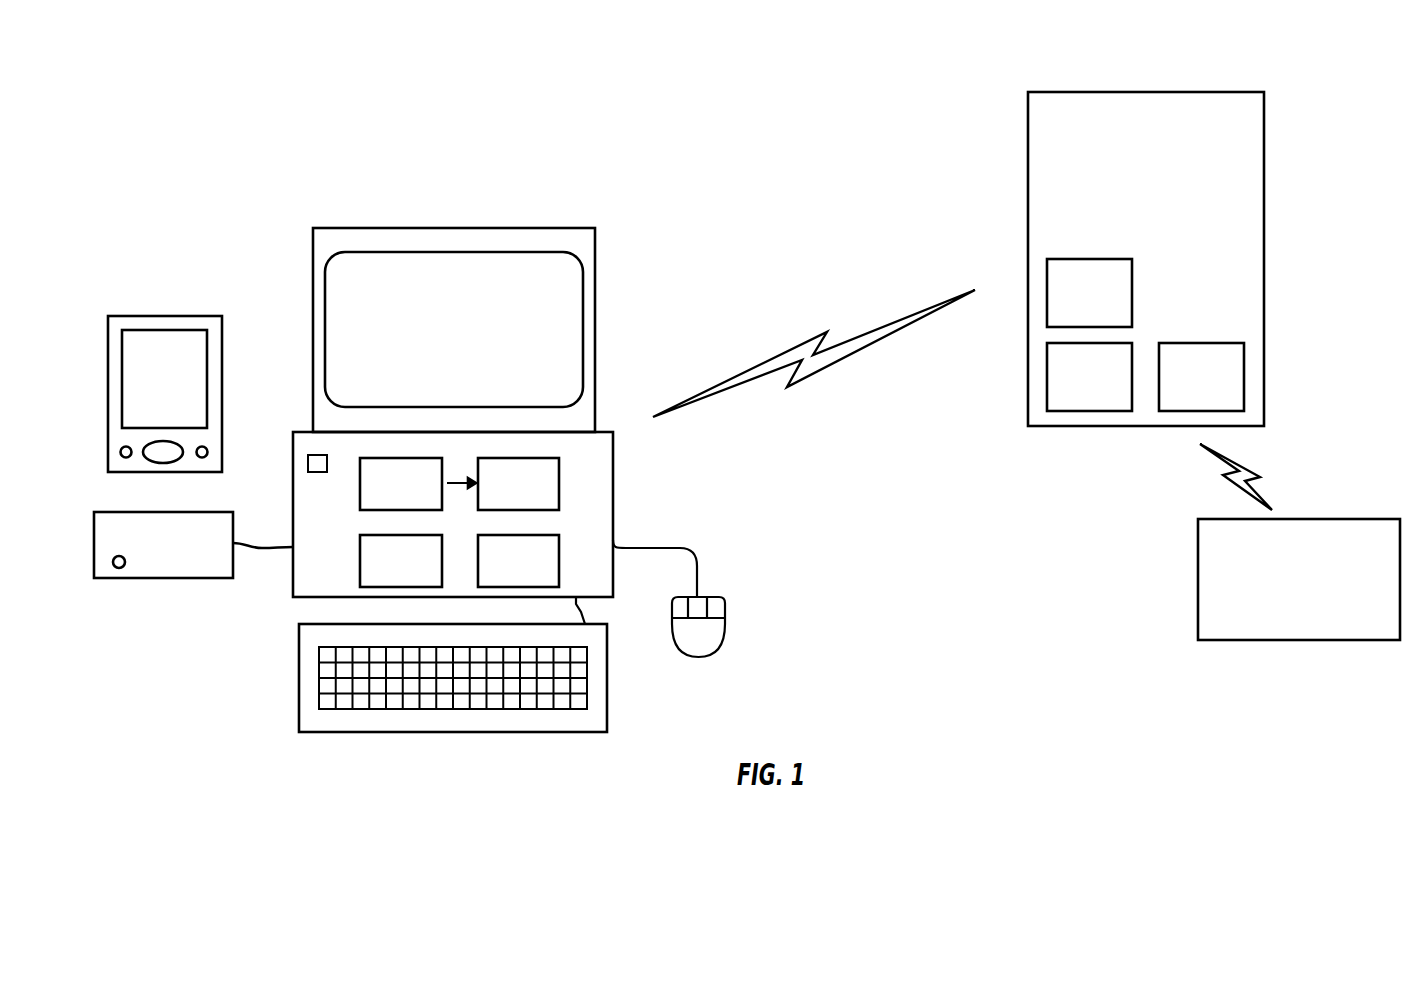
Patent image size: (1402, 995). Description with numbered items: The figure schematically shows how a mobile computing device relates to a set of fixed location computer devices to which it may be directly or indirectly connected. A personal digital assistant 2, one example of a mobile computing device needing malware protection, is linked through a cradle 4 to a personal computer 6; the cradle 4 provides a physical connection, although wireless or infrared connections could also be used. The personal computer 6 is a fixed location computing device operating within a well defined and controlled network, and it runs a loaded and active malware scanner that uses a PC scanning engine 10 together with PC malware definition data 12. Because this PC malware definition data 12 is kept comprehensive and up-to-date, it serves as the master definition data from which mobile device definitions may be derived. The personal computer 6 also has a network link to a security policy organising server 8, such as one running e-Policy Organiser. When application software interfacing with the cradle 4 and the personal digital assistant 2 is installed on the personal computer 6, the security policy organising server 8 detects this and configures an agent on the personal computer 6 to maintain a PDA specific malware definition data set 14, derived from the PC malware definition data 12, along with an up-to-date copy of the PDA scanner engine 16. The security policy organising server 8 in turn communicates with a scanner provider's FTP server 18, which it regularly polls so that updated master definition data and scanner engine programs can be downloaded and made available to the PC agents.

The personal digital assistant 2 is at (165, 316).
The cradle 4 is at (163, 578).
The personal computer 6 is at (613, 505).
The security policy organising server 8 is at (1145, 92).
The PC scanning engine 10 is at (360, 563).
The PC malware definition data 12 is at (360, 495).
The PDA malware definition data set 14 is at (559, 490).
The PDA scanner engine 16 is at (559, 543).
The FTP server 18 is at (1198, 582).